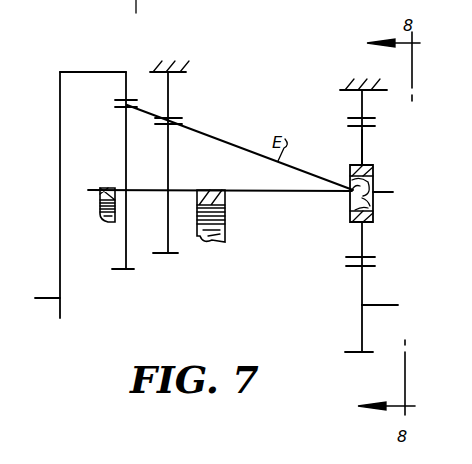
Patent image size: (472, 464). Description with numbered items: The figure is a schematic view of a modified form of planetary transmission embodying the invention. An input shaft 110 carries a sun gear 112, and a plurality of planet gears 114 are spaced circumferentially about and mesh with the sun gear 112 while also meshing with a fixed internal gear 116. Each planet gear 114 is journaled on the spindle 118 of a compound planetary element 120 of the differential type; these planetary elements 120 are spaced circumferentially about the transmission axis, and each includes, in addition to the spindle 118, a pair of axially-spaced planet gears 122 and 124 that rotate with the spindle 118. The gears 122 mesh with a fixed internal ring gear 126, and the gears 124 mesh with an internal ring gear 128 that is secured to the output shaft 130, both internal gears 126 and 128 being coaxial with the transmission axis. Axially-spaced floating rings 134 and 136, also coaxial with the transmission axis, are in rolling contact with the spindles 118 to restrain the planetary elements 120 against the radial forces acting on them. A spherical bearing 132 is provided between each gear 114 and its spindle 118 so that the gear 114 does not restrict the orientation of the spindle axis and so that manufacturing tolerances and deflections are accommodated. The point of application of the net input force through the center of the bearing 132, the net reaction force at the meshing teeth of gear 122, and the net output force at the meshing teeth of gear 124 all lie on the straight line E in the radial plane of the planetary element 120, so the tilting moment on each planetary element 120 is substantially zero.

The input shaft 110 is at (380, 305).
The sun gear 112 is at (358, 283).
The planet gear 114 is at (364, 148).
The fixed internal gear 116 is at (364, 108).
The spindle 118 is at (258, 192).
The compound planetary element 120 is at (241, 141).
The planet gear 122 is at (169, 158).
The planet gear 124 is at (124, 139).
The fixed internal ring gear 126 is at (169, 99).
The internal ring gear 128 is at (104, 72).
The output shaft 130 is at (43, 300).
The spherical bearing 132 is at (363, 183).
The floating ring 134 is at (107, 223).
The floating ring 136 is at (218, 237).